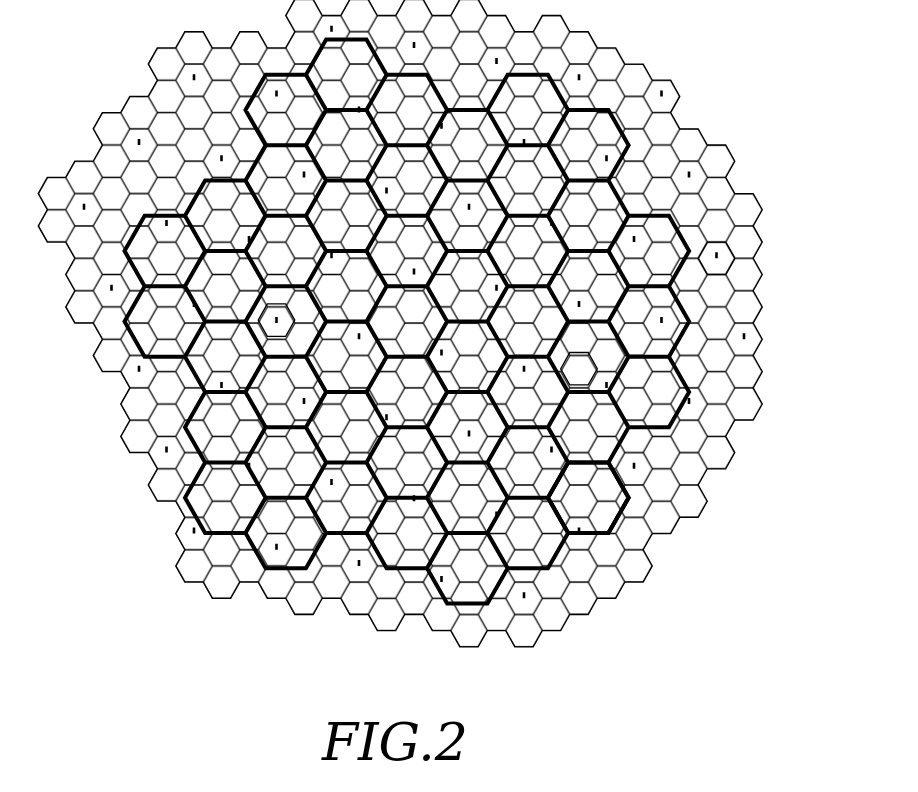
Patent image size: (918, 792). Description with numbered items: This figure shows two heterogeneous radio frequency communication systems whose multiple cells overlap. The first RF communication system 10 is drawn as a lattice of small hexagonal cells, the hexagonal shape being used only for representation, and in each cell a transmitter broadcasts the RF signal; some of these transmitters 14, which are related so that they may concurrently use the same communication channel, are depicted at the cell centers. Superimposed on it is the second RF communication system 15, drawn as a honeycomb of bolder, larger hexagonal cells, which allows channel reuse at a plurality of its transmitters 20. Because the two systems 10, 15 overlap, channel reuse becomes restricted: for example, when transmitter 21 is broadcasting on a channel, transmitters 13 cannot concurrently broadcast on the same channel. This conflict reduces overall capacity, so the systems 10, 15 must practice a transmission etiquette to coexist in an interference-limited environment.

The first RF communication system 10 is at (525, 648).
The transmitters 13 is at (247, 237).
The transmitters 14 is at (719, 258).
The second RF communication system 15 is at (628, 498).
The transmitters 20 is at (590, 364).
The transmitter 21 is at (276, 323).